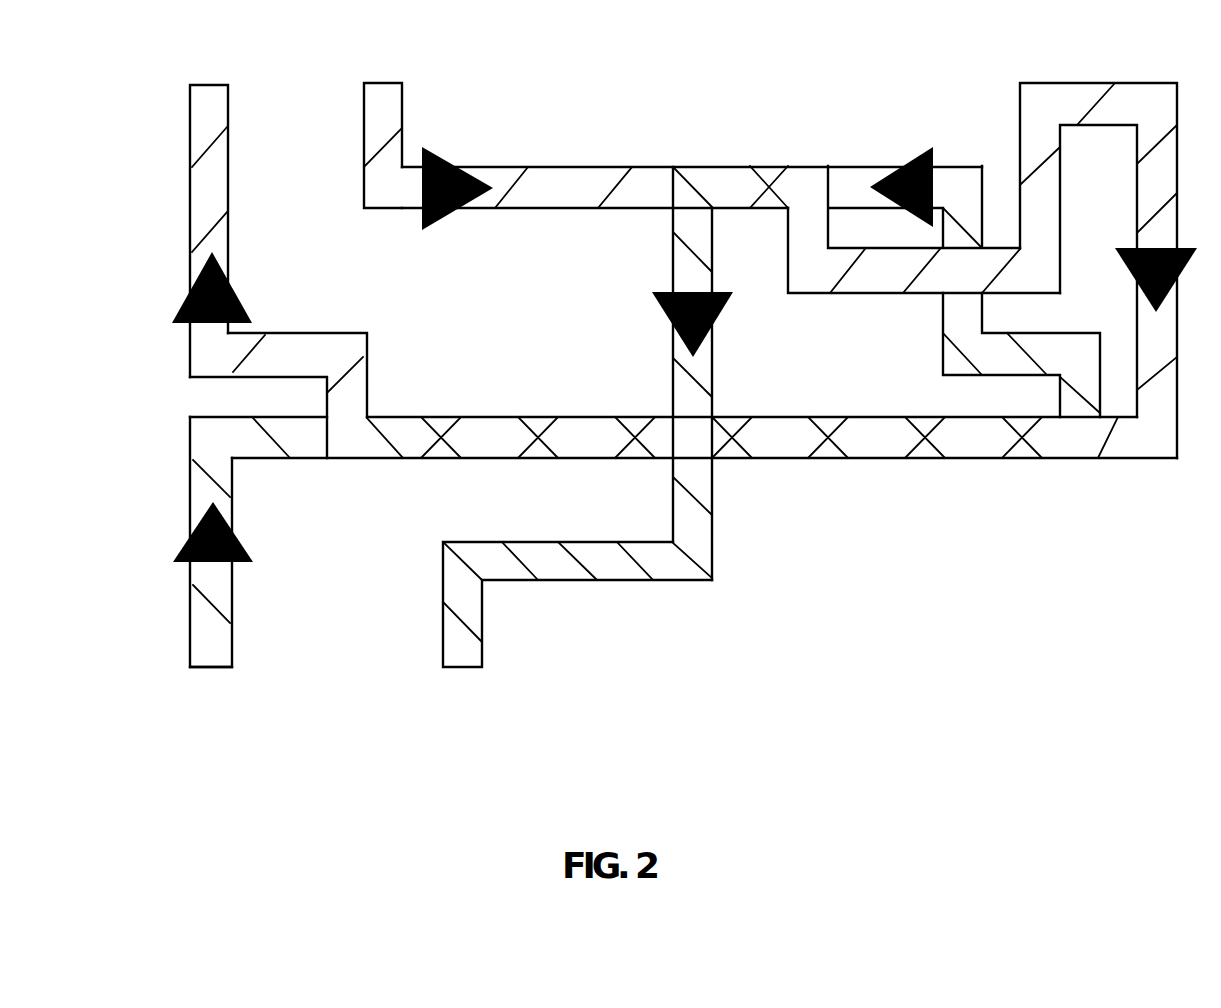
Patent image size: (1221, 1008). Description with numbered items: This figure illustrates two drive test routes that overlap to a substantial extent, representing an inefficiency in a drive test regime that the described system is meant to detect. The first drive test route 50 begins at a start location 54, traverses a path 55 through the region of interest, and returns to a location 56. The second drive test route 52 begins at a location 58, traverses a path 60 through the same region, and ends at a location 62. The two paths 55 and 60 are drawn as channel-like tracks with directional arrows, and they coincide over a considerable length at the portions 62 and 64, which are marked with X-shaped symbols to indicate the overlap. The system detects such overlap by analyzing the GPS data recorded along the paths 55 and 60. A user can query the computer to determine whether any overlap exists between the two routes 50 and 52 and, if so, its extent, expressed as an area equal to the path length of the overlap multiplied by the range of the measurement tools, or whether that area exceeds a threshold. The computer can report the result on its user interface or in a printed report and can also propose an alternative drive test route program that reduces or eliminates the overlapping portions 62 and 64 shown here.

The drive test route 1 50 is at (552, 208).
The drive test route 2 52 is at (192, 635).
The start location 54 is at (364, 87).
The path 55 is at (1020, 118).
The return location 56 is at (190, 86).
The start location 58 is at (232, 667).
The path 60 is at (943, 352).
The overlap portion 62 is at (782, 458).
The overlap portion 64 is at (713, 166).